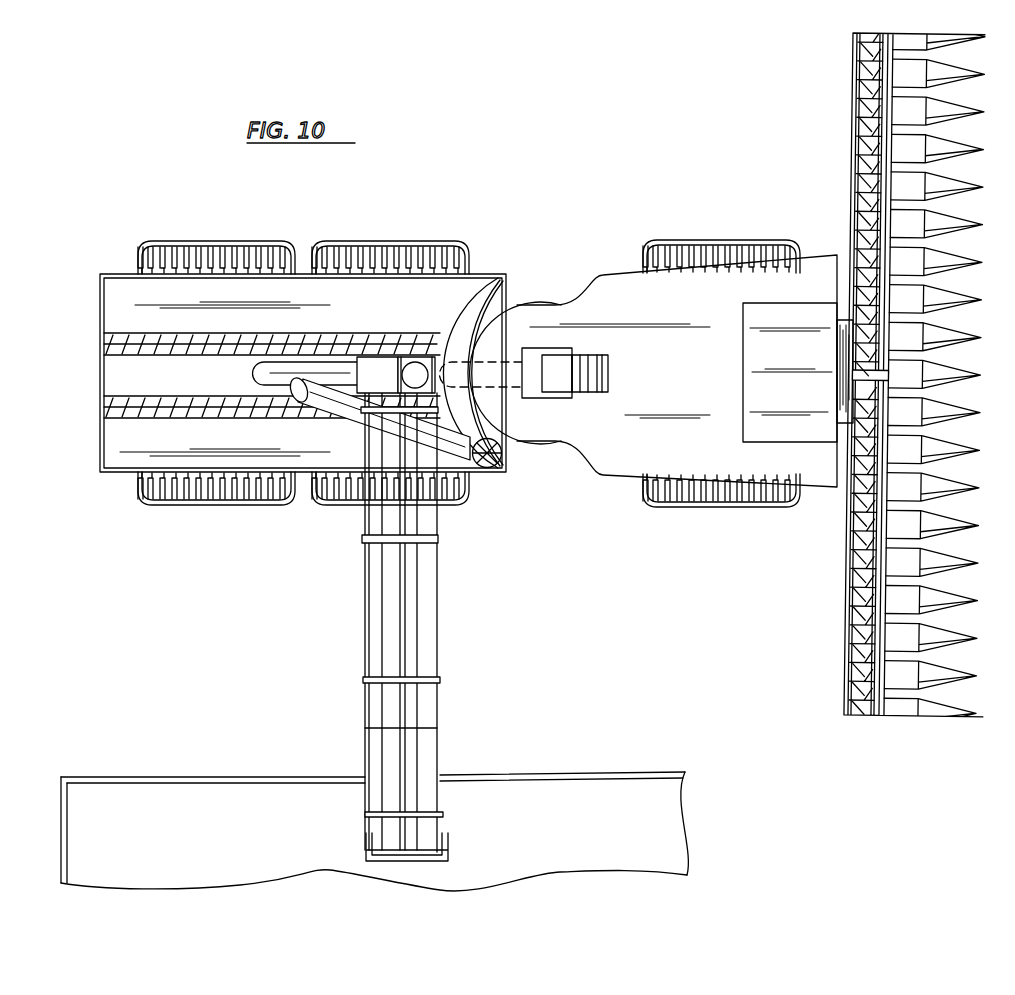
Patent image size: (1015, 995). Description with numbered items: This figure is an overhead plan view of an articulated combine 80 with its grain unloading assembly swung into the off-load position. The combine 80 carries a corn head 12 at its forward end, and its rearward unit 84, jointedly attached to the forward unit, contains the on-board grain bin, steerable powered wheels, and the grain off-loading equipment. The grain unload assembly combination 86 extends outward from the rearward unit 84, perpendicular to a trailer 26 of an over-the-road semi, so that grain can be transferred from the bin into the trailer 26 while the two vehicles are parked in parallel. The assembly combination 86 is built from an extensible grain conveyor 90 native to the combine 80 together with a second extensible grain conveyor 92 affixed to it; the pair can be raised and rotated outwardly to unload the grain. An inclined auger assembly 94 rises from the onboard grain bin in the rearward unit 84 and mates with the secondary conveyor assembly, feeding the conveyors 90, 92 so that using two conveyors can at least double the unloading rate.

The corn head 12 is at (858, 640).
The trailer 26 is at (563, 771).
The articulated combine 80 is at (571, 229).
The rearward unit 84 is at (122, 256).
The grain unload assembly combination 86 is at (461, 572).
The extensible grain conveyor 90 is at (438, 641).
The second extensible grain conveyor 92 is at (368, 640).
The inclined auger assembly 94 is at (383, 372).